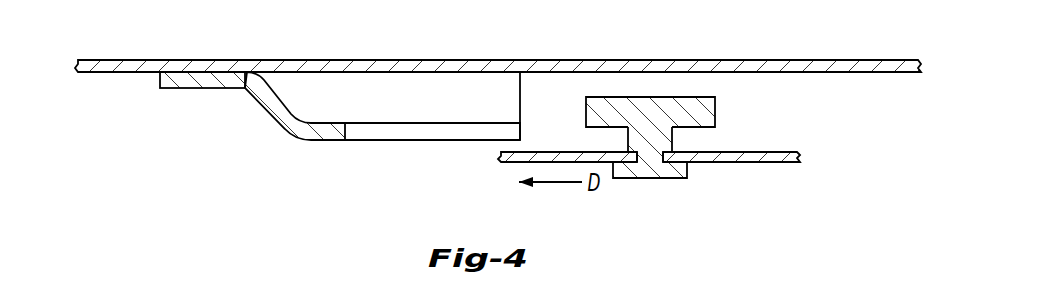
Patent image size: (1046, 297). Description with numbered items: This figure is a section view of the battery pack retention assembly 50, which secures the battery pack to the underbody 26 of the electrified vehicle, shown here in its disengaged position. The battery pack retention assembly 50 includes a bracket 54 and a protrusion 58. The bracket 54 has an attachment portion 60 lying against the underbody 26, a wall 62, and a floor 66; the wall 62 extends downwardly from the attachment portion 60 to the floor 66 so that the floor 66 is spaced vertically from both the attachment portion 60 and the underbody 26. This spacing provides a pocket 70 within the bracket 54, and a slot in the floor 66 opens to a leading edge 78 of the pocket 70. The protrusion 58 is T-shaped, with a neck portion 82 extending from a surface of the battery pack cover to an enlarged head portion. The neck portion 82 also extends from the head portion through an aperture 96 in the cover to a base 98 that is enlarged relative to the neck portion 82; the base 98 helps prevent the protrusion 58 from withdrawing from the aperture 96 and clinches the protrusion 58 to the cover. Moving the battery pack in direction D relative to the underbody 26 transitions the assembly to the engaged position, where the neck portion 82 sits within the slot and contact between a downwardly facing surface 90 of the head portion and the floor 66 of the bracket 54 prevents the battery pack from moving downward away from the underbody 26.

The underbody 26 is at (719, 74).
The battery pack retention assembly 50 is at (360, 130).
The bracket 54 is at (275, 122).
The protrusion 58 is at (675, 120).
The attachment portion 60 is at (190, 88).
The wall 62 is at (480, 90).
The floor 66 is at (405, 122).
The pocket 70 is at (345, 93).
The leading edge 78 is at (522, 127).
The neck portion 82 is at (672, 138).
The downwardly facing surface 90 is at (710, 136).
The aperture 96 is at (645, 163).
The base 98 is at (677, 178).